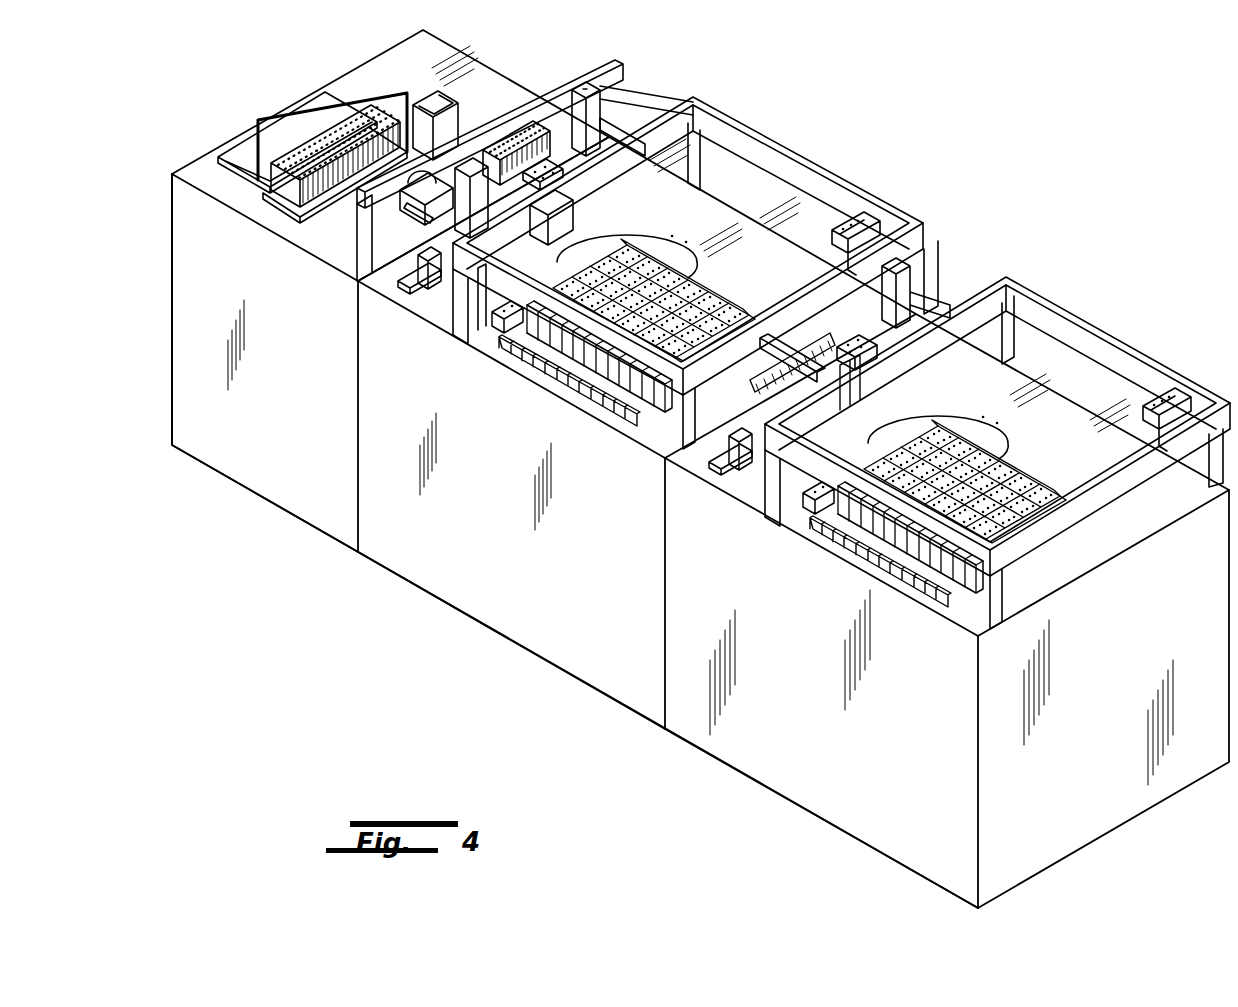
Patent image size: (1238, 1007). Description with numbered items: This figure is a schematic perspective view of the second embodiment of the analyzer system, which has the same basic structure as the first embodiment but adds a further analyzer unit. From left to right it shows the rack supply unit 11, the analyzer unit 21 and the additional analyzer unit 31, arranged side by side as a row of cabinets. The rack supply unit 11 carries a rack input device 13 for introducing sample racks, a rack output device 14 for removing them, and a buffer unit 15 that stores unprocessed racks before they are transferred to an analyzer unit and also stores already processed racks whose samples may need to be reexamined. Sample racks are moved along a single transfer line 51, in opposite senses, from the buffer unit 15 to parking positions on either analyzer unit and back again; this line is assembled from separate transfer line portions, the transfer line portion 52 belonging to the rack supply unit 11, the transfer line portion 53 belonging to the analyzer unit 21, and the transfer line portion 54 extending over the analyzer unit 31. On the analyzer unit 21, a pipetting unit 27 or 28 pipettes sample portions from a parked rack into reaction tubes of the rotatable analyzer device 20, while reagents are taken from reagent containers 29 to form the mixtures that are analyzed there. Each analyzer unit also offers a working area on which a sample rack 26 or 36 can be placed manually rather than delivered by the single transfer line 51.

The rack supply unit 11 is at (277, 505).
The rack input device 13 is at (278, 212).
The rack output device 14 is at (241, 176).
The buffer unit 15 is at (545, 125).
The rotatable analyzer device 20 is at (683, 247).
The analyzer unit 21 is at (487, 630).
The sample rack 26 is at (418, 283).
The pipetting unit 27 is at (614, 98).
The pipetting unit 28 is at (420, 190).
The reagent containers 29 is at (535, 358).
The analyzer unit 31 is at (807, 810).
The sample rack 36 is at (728, 473).
The single transfer line 51 is at (779, 363).
The transfer line portion 52 is at (329, 95).
The transfer line portion 53 is at (790, 347).
The transfer line portion 54 is at (900, 408).